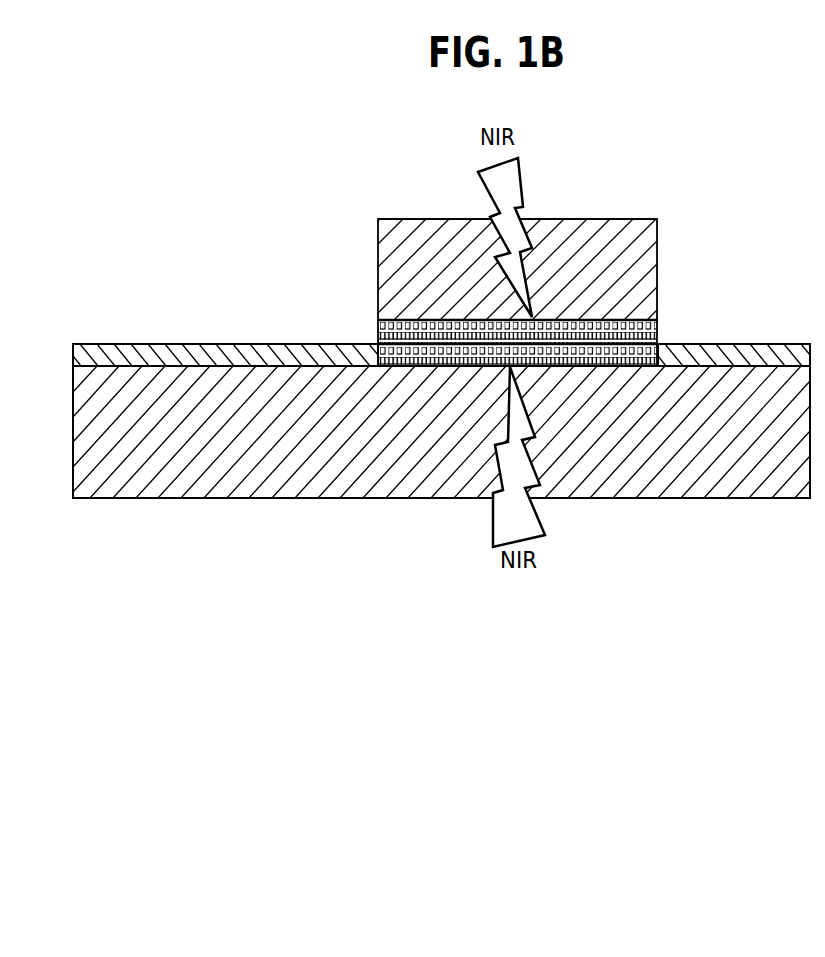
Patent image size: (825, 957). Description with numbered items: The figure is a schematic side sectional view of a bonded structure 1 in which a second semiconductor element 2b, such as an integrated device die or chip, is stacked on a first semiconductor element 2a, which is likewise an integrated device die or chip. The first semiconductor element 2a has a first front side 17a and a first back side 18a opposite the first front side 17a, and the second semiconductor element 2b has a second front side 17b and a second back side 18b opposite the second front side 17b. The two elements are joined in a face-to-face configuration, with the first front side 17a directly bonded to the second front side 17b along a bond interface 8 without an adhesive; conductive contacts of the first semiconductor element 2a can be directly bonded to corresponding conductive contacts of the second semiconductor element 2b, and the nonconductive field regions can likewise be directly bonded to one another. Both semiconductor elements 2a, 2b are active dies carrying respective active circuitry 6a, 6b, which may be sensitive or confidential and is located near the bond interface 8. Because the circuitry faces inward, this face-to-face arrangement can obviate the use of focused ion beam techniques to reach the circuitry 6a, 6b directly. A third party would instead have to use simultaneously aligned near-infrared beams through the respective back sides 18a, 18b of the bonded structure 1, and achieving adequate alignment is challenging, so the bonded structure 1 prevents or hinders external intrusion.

The bonded structure 1 is at (192, 182).
The first semiconductor element 2a is at (193, 467).
The second semiconductor element 2b is at (417, 242).
The active circuitry 6a is at (655, 328).
The active circuitry 6b is at (621, 314).
The bond interface 8 is at (414, 339).
The first front side 17a is at (162, 337).
The second front side 17b is at (603, 362).
The first back side 18a is at (584, 505).
The second back side 18b is at (591, 250).